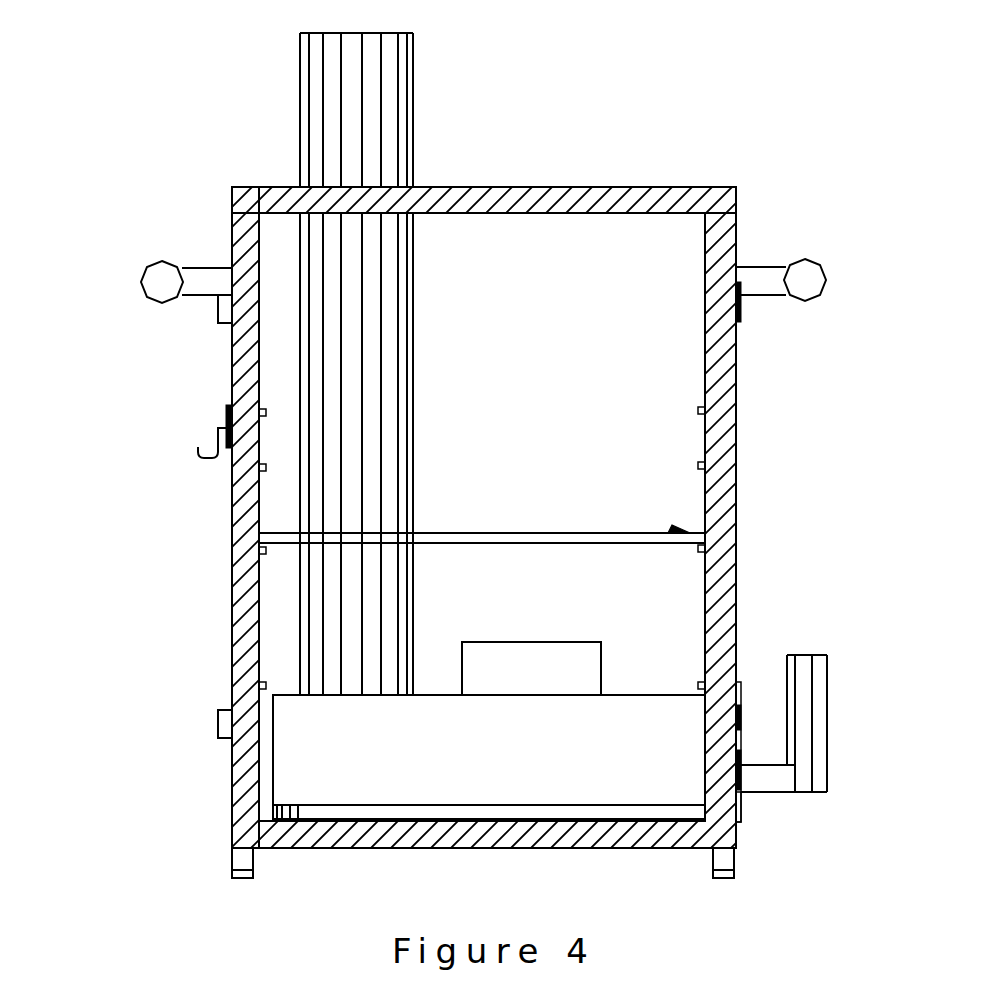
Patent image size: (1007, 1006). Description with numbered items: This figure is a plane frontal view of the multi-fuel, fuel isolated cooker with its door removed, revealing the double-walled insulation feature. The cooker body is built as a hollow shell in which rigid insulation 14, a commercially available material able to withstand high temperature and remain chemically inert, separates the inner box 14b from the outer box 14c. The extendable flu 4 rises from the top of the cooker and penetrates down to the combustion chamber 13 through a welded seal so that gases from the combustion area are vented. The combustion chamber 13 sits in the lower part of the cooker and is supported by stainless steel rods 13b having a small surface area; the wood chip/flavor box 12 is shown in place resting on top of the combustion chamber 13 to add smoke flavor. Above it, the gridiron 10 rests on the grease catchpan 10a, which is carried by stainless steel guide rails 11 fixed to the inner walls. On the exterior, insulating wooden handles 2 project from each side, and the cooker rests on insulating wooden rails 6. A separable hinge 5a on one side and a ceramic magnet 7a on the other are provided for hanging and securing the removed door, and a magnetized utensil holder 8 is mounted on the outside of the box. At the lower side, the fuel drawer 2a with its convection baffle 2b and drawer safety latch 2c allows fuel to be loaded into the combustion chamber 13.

The wooden insulating handles 2 is at (817, 712).
The fuel drawer 2a is at (741, 800).
The convection baffle 2b is at (741, 690).
The drawer safety latch 2c is at (741, 725).
The extendable flu 4 is at (404, 118).
The separable hinge 5a is at (741, 318).
The wooden insulating rails 6 is at (240, 862).
The ceramic magnet 7a is at (220, 724).
The magnetized utensil holders 8 is at (228, 412).
The gridiron 10 is at (690, 533).
The grease catchpan 10a is at (665, 543).
The guide rails 11 is at (706, 410).
The wood chip/flavor box 12 is at (470, 655).
The combustion chamber 13 is at (313, 746).
The stainless steel rods 13b is at (276, 815).
The rigid insulation 14 is at (257, 200).
The inner box 14b is at (252, 230).
The outer box 14c is at (272, 186).